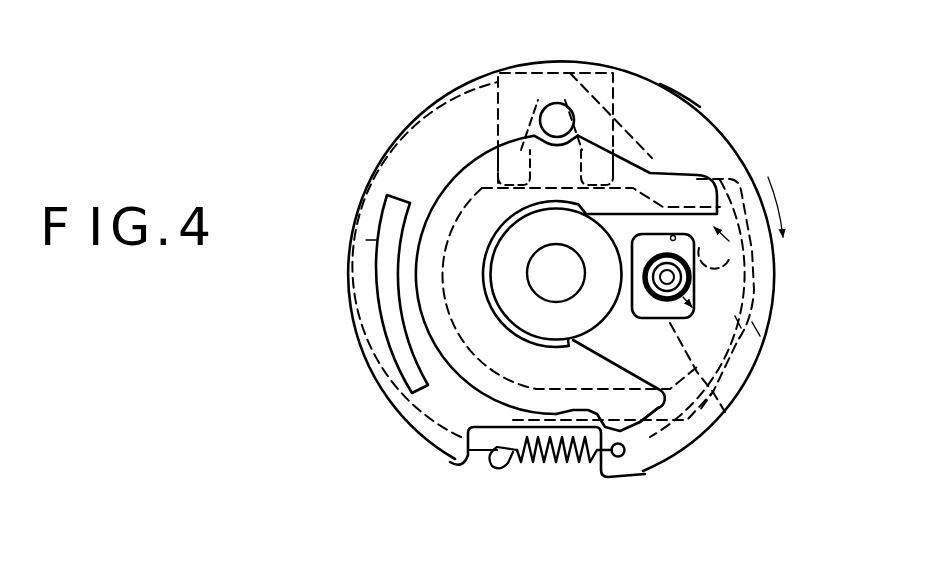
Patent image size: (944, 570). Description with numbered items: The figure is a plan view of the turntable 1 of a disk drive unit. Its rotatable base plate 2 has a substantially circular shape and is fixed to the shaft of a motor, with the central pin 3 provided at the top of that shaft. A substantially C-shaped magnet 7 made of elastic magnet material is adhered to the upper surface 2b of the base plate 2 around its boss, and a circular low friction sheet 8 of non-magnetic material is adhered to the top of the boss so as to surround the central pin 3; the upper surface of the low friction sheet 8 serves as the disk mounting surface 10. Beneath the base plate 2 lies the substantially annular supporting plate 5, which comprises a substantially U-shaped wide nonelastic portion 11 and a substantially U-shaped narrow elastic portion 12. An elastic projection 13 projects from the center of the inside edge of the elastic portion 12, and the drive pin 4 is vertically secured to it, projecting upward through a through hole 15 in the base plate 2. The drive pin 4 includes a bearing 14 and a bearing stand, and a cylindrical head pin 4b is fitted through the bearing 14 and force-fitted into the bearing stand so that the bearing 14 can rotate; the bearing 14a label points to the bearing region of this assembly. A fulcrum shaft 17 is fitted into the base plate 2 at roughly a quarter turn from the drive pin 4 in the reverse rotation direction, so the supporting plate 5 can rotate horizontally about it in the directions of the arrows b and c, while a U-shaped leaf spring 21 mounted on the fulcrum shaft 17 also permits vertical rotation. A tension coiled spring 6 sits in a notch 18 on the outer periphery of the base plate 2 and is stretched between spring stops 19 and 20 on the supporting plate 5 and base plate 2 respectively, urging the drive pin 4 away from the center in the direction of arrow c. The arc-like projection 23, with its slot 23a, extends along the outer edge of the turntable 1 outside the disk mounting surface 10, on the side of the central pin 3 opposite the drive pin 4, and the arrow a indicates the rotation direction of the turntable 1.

The turntable 1 is at (345, 152).
The rotatable base plate 2 is at (397, 140).
The upper surface 2b is at (688, 113).
The central pin 3 is at (540, 288).
The drive pin 4 is at (692, 305).
The head pin 4b is at (692, 287).
The supporting plate 5 is at (432, 437).
The spring 6 is at (562, 461).
The magnet 7 is at (472, 170).
The low friction sheet 8 is at (585, 308).
The disk mounting surface 10 is at (517, 241).
The nonelastic portion 11 is at (392, 181).
The elastic portion 12 is at (757, 331).
The elastic projection 13 is at (717, 400).
The bearing 14 is at (636, 233).
The bearing 14a is at (690, 283).
The through hole 15 is at (678, 233).
The fulcrum shaft 17 is at (556, 112).
The notch 18 is at (599, 474).
The spring stop 19 is at (495, 466).
The spring stop 20 is at (623, 456).
The leaf spring 21 is at (510, 72).
The arc-like projection 23 is at (373, 243).
The arcuate slot 23a is at (387, 305).
The rotation direction a is at (777, 197).
The arrow b is at (630, 305).
The arrow c is at (729, 237).